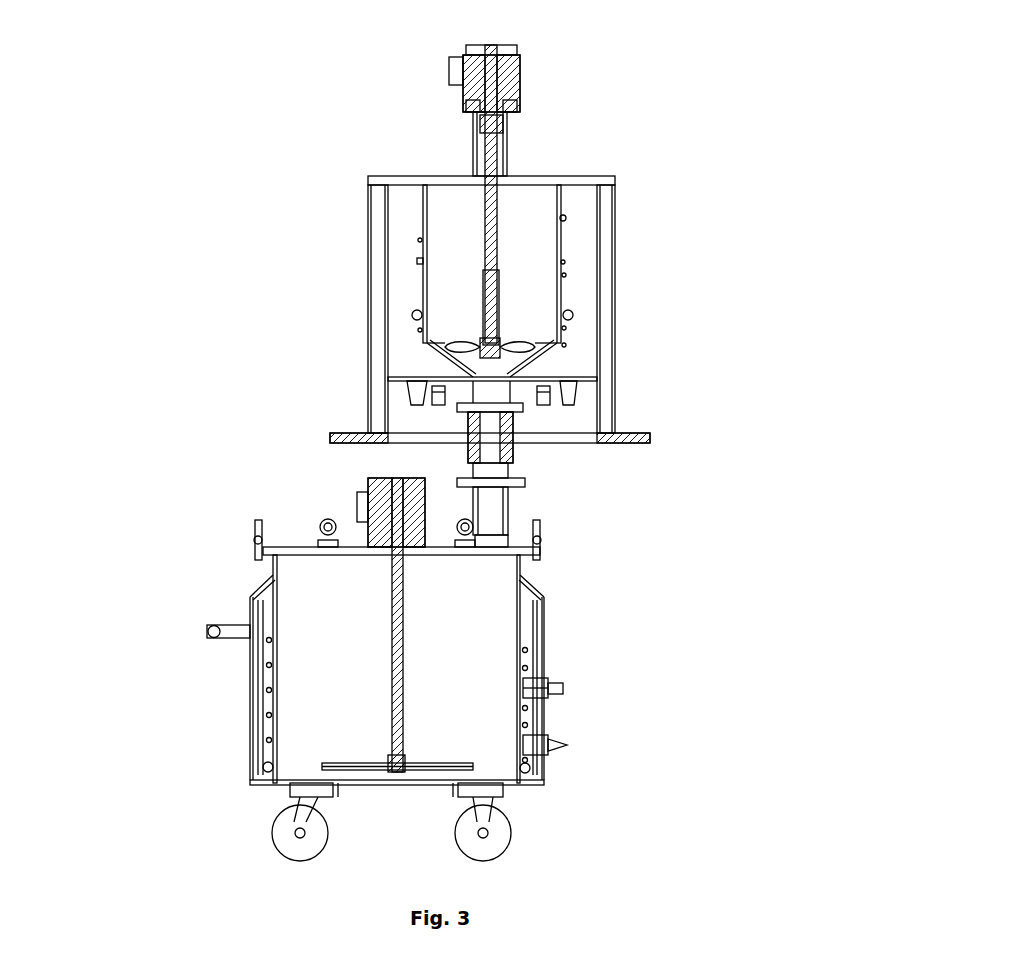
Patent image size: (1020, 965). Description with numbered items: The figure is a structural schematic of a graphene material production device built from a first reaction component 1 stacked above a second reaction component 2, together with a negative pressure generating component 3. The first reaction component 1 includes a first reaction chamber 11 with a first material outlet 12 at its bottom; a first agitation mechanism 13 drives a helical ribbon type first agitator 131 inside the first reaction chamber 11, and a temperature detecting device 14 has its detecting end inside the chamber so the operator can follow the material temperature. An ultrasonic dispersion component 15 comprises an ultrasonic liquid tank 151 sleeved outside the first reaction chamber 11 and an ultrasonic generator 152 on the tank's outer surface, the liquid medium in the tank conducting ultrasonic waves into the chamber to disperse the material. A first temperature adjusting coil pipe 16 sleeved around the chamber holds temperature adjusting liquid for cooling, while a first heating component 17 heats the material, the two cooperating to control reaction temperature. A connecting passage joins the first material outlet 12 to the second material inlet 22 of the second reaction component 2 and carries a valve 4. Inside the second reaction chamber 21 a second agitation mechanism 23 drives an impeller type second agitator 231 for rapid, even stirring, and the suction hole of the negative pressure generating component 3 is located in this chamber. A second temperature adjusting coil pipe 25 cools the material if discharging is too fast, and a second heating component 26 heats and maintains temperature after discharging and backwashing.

The first reaction component 1 is at (389, 149).
The first reaction chamber 11 is at (391, 266).
The first material outlet 12 is at (564, 326).
The first agitation mechanism 13 is at (616, 194).
The first agitator 131 is at (372, 321).
The temperature detecting device 14 is at (612, 255).
The ultrasonic dispersion component 15 is at (284, 297).
The ultrasonic liquid tank 151 is at (708, 309).
The ultrasonic generator 152 is at (390, 353).
The first temperature adjusting coil pipe 16 is at (691, 251).
The first heating component 17 is at (688, 176).
The second reaction component 2 is at (298, 636).
The second reaction chamber 21 is at (170, 653).
The second material inlet 22 is at (494, 506).
The second agitation mechanism 23 is at (499, 625).
The second agitator 231 is at (497, 723).
The second temperature adjusting coil pipe 25 is at (506, 669).
The second heating component 26 is at (641, 727).
The negative pressure generating component 3 is at (651, 648).
The valve 4 is at (600, 440).